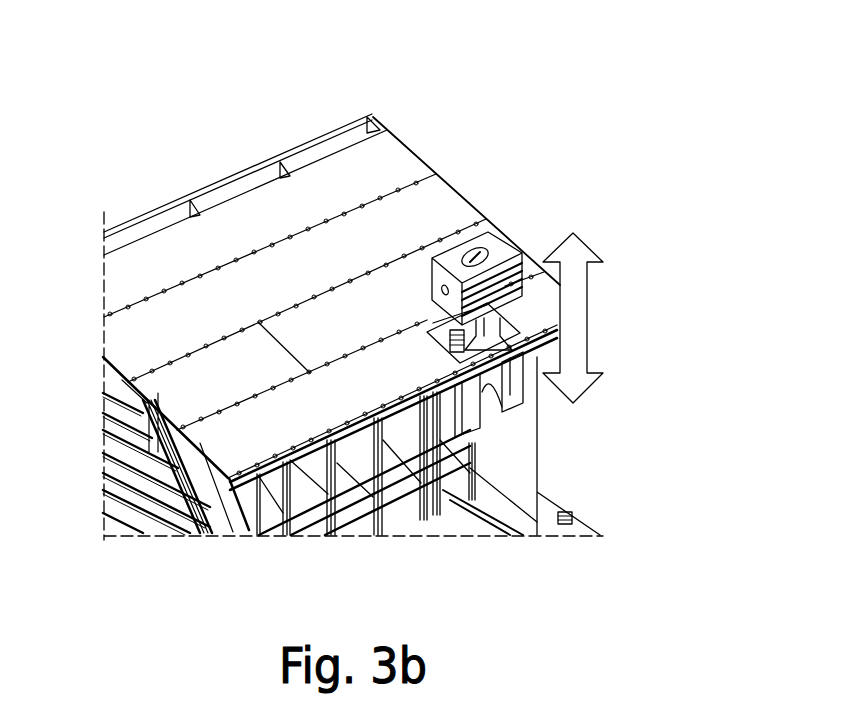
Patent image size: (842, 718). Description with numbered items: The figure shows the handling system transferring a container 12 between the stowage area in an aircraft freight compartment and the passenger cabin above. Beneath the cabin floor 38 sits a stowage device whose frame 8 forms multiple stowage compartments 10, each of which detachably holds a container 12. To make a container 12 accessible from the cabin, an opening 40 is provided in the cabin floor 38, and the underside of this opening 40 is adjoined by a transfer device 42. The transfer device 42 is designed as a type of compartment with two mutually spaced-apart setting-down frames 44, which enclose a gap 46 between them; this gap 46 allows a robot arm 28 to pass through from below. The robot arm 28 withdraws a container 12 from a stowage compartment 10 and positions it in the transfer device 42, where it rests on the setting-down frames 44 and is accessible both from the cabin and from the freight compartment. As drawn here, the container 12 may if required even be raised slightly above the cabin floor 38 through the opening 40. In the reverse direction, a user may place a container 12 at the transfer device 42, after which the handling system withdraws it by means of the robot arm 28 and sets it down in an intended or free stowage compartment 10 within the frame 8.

The frame 8 is at (257, 488).
The stowage compartment 10 is at (354, 448).
The container 12 is at (497, 251).
The robot arm 28 is at (454, 341).
The cabin floor 38 is at (390, 153).
The opening 40 is at (512, 330).
The transfer device 42 is at (544, 364).
The setting-down frame 44 is at (518, 399).
The gap 46 is at (502, 445).